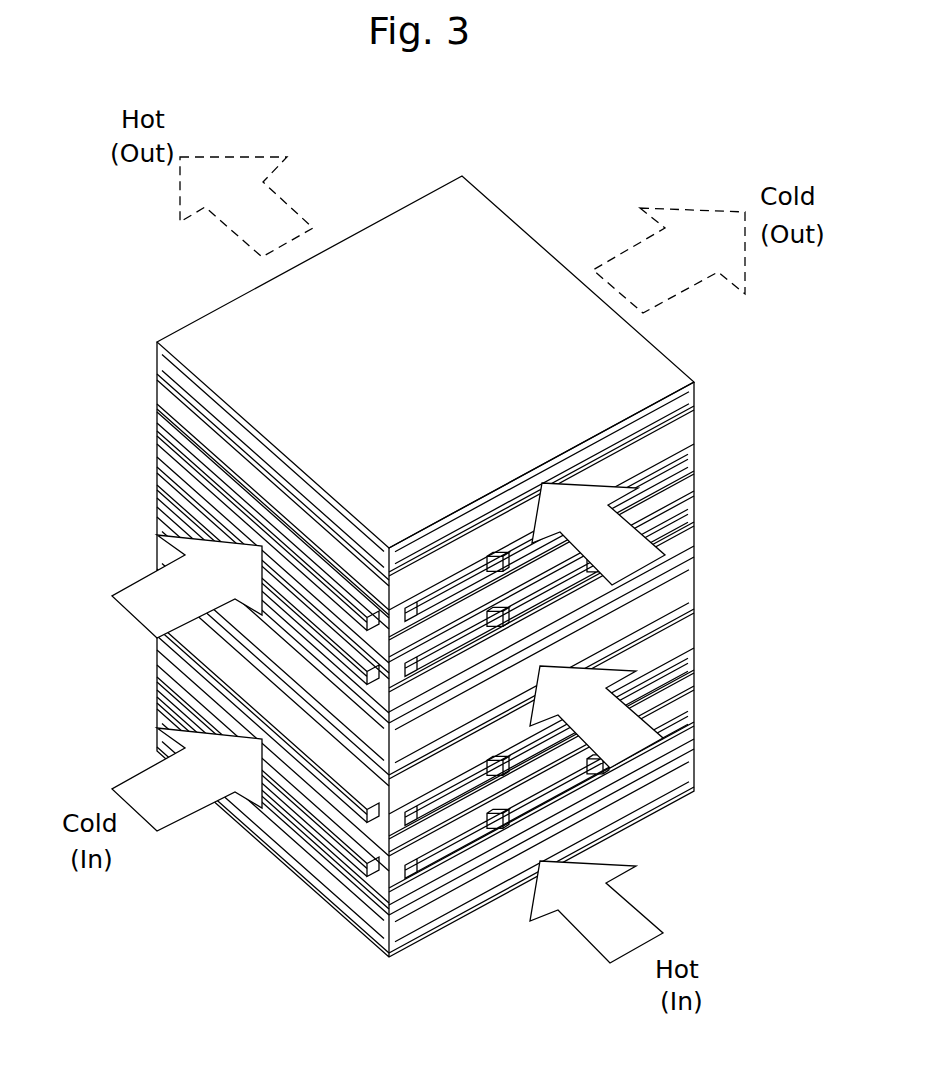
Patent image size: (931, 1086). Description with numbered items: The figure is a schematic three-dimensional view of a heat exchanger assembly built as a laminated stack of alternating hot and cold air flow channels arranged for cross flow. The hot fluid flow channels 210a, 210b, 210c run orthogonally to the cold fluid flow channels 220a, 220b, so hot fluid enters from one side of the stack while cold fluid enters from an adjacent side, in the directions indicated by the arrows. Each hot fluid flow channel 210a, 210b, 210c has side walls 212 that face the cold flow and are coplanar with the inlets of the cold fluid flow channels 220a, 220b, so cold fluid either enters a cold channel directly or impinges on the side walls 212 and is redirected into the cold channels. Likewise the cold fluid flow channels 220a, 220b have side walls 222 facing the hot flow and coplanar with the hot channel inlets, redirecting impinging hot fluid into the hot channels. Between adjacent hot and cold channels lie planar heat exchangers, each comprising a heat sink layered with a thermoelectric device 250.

The side walls 212 is at (163, 358).
The hot fluid flow channel 210a is at (690, 777).
The hot fluid flow channel 210b is at (668, 597).
The hot fluid flow channel 210c is at (695, 397).
The cold fluid flow channel 220a is at (162, 663).
The cold fluid flow channel 220b is at (162, 460).
The side walls 222 is at (680, 497).
The thermoelectric device 250 is at (374, 866).